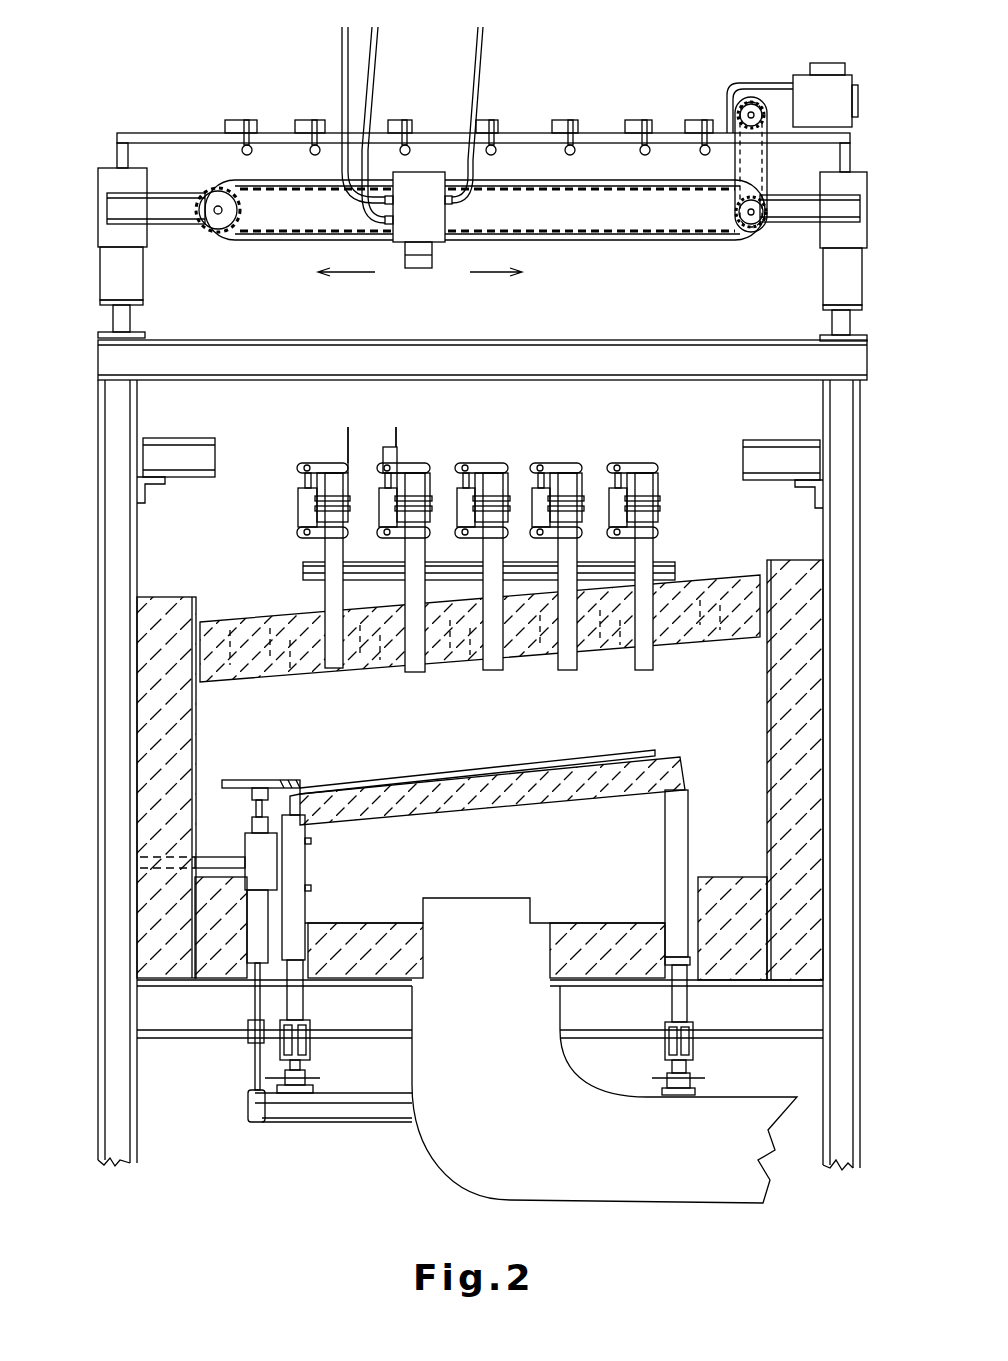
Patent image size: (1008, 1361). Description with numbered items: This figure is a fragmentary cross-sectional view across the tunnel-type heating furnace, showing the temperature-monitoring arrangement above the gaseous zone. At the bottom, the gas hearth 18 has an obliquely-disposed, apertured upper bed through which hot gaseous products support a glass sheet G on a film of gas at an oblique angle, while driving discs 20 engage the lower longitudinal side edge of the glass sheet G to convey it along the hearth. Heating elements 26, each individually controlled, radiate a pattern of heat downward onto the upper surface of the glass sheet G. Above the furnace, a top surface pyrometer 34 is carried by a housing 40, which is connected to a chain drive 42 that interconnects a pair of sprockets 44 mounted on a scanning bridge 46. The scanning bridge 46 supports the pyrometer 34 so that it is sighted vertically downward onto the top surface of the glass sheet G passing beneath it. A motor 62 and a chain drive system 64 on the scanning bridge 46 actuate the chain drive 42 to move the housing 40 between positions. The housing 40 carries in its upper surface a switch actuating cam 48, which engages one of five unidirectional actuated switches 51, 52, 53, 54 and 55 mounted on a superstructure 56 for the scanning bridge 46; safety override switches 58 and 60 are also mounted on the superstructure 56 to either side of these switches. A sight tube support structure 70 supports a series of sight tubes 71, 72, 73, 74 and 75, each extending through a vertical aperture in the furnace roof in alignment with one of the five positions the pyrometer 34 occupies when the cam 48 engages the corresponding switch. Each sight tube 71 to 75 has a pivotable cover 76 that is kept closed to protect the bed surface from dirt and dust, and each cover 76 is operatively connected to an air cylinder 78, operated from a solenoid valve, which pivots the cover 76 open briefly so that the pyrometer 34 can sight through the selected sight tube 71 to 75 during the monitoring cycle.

The gas hearth 18 is at (455, 812).
The driving discs 20 is at (250, 780).
The heating elements 26 is at (282, 681).
The top surface pyrometer 34 is at (407, 216).
The housing 40 is at (400, 243).
The chain drive 42 is at (282, 192).
The sprockets 44 is at (206, 227).
The scanning bridge 46 is at (107, 212).
The switch actuating cam 48 is at (410, 152).
The unidirectional actuated switch 51 is at (303, 120).
The unidirectional actuated switch 52 is at (398, 120).
The unidirectional actuated switch 53 is at (486, 120).
The unidirectional actuated switch 54 is at (563, 120).
The unidirectional actuated switch 55 is at (632, 120).
The superstructure 56 is at (130, 133).
The safety override switch 58 is at (237, 120).
The safety override switch 60 is at (692, 120).
The motor 62 is at (826, 75).
The chain drive system 64 is at (768, 167).
The sight tube support structure 70 is at (203, 428).
The sight tube 71 is at (325, 540).
The sight tube 72 is at (405, 540).
The sight tube 73 is at (483, 540).
The sight tube 74 is at (558, 540).
The sight tube 75 is at (635, 540).
The pivotable cover 76 is at (352, 470).
The air cylinder 78 is at (298, 505).
The glass sheet G is at (491, 749).